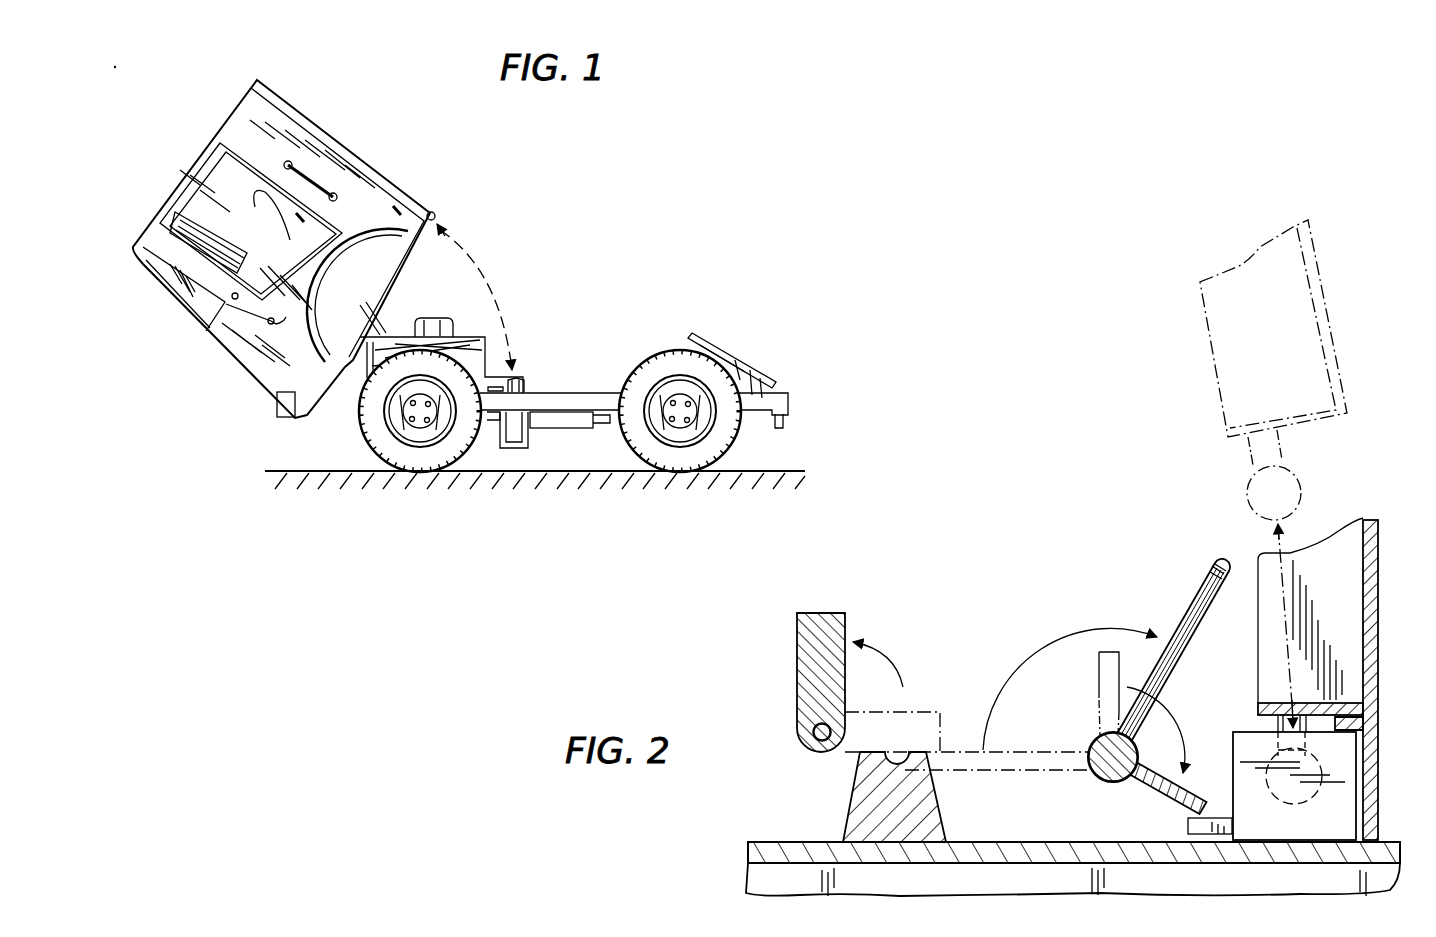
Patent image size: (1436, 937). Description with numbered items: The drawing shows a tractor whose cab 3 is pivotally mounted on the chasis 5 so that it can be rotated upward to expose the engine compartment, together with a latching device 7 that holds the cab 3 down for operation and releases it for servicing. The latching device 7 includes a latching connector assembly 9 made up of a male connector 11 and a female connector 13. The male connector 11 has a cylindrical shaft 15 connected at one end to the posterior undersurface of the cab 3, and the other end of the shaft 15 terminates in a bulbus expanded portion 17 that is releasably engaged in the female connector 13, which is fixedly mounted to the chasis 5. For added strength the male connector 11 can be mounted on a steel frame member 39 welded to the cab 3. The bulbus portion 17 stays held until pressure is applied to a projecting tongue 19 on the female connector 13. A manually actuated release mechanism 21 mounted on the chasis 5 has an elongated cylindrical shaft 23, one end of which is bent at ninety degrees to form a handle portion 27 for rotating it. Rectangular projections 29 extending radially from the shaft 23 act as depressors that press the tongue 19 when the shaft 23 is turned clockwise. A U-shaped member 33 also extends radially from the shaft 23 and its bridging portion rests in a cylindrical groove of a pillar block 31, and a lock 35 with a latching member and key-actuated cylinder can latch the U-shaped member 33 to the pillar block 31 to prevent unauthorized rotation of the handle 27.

In FIG. 1, the cab 3 is at (290, 105).
In FIG. 2, the cab 3 is at (1378, 612).
In FIG. 1, the chasis 5 is at (320, 420).
In FIG. 2, the chasis 5 is at (1398, 854).
In FIG. 1, the latching device 7 is at (497, 382).
In FIG. 2, the latching device 7 is at (1396, 542).
In FIG. 2, the latching connector assembly 9 is at (1360, 755).
In FIG. 1, the male connector 11 is at (433, 214).
In FIG. 2, the male connector 11 is at (1284, 470).
In FIG. 2, the female connector 13 is at (1346, 826).
In FIG. 2, the cylindrical shaft 15 is at (1250, 462).
In FIG. 2, the bulbus expanded portion 17 is at (1250, 504).
In FIG. 2, the projecting tongue 19 is at (1232, 815).
In FIG. 2, the manually actuated release mechanism 21 is at (1050, 612).
In FIG. 2, the elongated cylindrical shaft 23 is at (1108, 770).
In FIG. 1, the handle portion 27 is at (520, 382).
In FIG. 2, the rectangular projections 29 is at (1170, 798).
In FIG. 2, the pillar blocks 31 is at (855, 800).
In FIG. 2, the U-shaped member 33 is at (1192, 603).
In FIG. 2, the lock 35 is at (797, 728).
In FIG. 2, the frame member 39 is at (1266, 706).